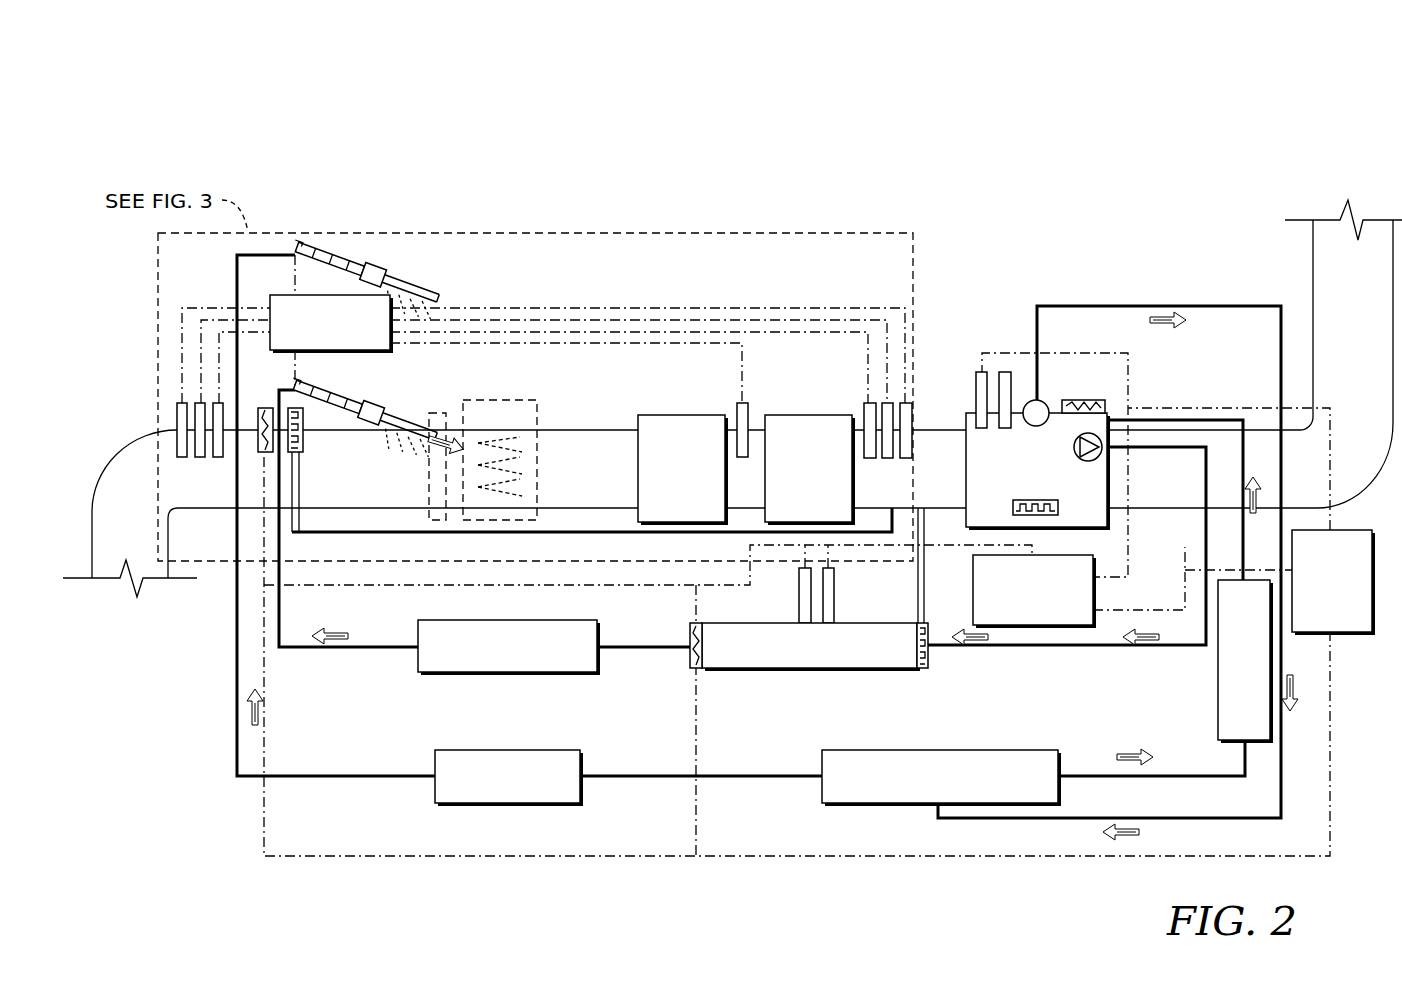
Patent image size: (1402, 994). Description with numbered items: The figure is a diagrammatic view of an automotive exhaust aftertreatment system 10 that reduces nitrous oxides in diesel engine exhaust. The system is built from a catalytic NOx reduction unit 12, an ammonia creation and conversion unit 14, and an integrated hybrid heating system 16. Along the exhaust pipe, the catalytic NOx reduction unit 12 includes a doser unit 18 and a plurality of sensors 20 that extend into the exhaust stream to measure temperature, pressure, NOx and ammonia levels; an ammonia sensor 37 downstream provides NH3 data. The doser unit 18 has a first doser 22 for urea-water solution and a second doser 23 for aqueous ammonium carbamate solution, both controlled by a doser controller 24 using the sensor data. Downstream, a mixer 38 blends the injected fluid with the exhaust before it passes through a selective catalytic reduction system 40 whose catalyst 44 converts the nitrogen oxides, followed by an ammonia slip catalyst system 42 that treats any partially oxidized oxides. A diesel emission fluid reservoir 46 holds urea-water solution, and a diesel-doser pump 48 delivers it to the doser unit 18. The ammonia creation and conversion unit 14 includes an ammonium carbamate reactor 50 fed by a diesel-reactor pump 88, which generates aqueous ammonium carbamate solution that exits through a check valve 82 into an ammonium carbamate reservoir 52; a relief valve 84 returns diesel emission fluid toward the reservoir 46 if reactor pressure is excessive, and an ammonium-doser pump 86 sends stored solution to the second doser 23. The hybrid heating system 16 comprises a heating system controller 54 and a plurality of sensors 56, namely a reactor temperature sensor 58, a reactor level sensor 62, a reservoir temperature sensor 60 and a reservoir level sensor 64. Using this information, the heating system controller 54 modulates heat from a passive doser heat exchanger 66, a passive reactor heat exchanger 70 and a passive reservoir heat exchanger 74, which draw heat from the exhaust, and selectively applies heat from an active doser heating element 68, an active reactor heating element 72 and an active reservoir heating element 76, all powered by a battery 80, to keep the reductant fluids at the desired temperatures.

The automotive exhaust aftertreatment system 10 is at (248, 110).
The catalytic NOx reduction unit 12 is at (827, 340).
The ammonia creation and conversion unit 14 is at (1018, 663).
The hybrid heating system 16 is at (322, 503).
The doser unit 18 is at (454, 255).
The plurality of sensors 20 is at (170, 398).
The first doser 22 is at (297, 247).
The second doser 23 is at (420, 408).
The doser controller 24 is at (270, 297).
The ammonia sensor 37 is at (748, 413).
The mixer 38 is at (485, 400).
The selective catalytic reduction system 40 is at (683, 415).
The ammonia slip catalyst system 42 is at (808, 415).
The catalyst 44 is at (698, 415).
The diesel emission fluid reservoir 46 is at (876, 805).
The diesel-doser pump 48 is at (486, 803).
The ammonium carbamate reactor 50 is at (975, 530).
The ammonium carbamate reservoir 52 is at (703, 668).
The heating system controller 54 is at (1186, 534).
The plurality of sensors 56 is at (997, 350).
The reactor temperature sensor 58 is at (973, 400).
The reservoir temperature sensor 60 is at (797, 593).
The reactor level sensor 62 is at (1011, 397).
The reservoir level sensor 64 is at (834, 605).
The passive doser heat exchanger 66 is at (303, 438).
The active doser heating element 68 is at (258, 440).
The passive reactor heat exchanger 70 is at (1033, 517).
The active reactor heating element 72 is at (1063, 397).
The passive reservoir heat exchanger 74 is at (947, 624).
The active reservoir heating element 76 is at (688, 657).
The battery 80 is at (1343, 528).
The check valve 82 is at (1084, 460).
The relief valve 84 is at (1047, 402).
The ammonium-doser pump 86 is at (548, 672).
The diesel-reactor pump 88 is at (1218, 702).